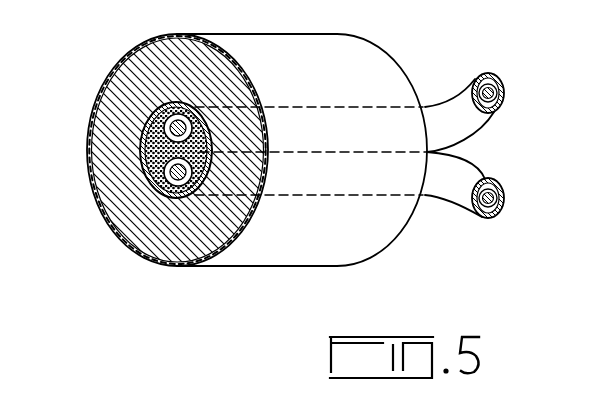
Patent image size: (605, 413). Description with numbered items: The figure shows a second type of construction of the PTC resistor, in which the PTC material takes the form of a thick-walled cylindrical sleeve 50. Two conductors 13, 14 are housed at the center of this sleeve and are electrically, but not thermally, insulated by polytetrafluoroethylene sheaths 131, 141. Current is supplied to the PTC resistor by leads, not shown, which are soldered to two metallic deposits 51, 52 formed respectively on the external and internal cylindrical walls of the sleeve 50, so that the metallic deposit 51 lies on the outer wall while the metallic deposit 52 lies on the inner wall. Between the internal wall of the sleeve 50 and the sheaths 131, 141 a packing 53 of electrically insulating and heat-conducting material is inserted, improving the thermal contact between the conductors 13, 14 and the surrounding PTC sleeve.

The cylindrical sleeve 50 is at (174, 232).
The metallic deposit 51 is at (130, 250).
The metallic deposit 52 is at (100, 86).
The packing 53 is at (142, 163).
The conductor 13 is at (501, 84).
The sheath 131 is at (477, 82).
The conductor 14 is at (501, 210).
The sheath 141 is at (506, 194).